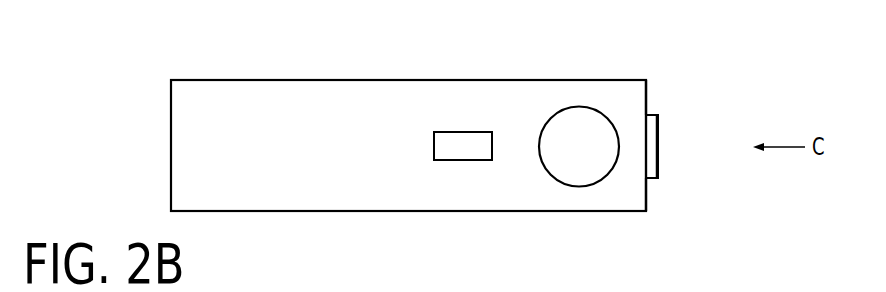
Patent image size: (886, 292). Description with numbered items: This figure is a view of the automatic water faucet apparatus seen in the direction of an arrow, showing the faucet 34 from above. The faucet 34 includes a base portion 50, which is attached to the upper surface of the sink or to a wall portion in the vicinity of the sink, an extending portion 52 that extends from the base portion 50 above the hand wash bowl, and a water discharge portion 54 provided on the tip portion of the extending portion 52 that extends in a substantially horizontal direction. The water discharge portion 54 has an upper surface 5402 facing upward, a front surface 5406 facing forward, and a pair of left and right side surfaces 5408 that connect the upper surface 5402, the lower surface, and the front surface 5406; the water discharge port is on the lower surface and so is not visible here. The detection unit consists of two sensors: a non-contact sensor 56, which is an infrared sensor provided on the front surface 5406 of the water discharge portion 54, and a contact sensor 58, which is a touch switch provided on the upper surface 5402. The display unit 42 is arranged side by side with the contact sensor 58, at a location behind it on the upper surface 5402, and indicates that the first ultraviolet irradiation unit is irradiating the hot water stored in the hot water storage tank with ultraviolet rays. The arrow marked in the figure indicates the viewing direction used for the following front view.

The base portion 50 is at (171, 143).
The extending portion 52 is at (253, 80).
The faucet 34 is at (374, 70).
The display unit 42 is at (463, 131).
The contact sensor 58 is at (568, 117).
The side surfaces 5408 is at (583, 80).
The upper surface 5402 is at (622, 98).
The water discharge portion 54 is at (646, 99).
The non-contact sensor 56 is at (658, 140).
The front surface 5406 is at (646, 193).